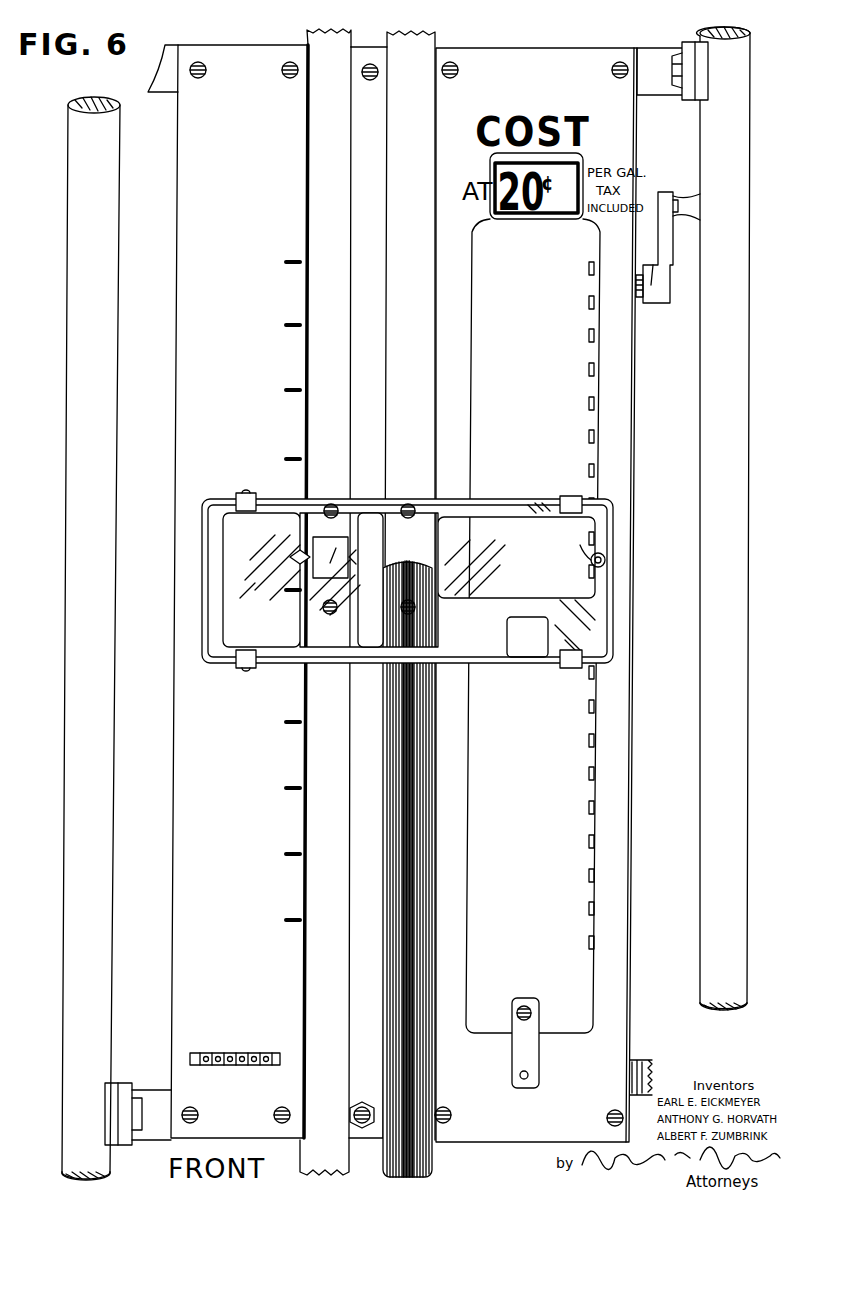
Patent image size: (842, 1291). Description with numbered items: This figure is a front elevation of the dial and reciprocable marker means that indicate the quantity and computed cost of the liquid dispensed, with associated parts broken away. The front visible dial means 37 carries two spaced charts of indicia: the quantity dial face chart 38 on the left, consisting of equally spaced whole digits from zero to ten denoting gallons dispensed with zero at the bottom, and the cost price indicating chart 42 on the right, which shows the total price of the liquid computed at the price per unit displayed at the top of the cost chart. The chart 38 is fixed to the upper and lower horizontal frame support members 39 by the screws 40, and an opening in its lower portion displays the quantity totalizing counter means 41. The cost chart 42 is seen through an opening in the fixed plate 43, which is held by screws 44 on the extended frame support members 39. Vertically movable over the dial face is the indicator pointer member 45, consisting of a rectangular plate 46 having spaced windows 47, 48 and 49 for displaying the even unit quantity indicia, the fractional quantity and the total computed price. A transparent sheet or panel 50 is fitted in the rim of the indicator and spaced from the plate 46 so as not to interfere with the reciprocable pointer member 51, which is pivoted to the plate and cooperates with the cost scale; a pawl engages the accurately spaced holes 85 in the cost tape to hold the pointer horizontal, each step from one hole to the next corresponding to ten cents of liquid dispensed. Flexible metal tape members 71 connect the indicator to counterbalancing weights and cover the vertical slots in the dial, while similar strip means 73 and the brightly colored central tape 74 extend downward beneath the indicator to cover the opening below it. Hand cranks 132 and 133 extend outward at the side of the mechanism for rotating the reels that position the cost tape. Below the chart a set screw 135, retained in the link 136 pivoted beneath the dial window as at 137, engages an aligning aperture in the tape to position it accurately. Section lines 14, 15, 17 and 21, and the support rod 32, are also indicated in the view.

The section line 14- 14 is at (150, 557).
The section line 15- 15 is at (368, 466).
The section line 17- 17 is at (376, 1178).
The section line 21- 21 is at (544, 1110).
The vertical support rod 32 is at (697, 117).
The front visible dial means 37 is at (198, 230).
The quantity dial face chart 38 is at (212, 55).
The horizontal frame support members 39 is at (176, 88).
The screws 40 is at (282, 70).
The quantity totalizing counter means 41 is at (266, 1053).
The cost price indicating chart 42 is at (474, 232).
The fixed plate 43 is at (444, 262).
The screws 44 is at (457, 76).
The indicator pointer member 45 is at (616, 620).
The rectangular plate 46 is at (208, 505).
The window 47 is at (233, 636).
The window 48 is at (343, 545).
The window 49 is at (460, 522).
The transparent sheet or panel 50 is at (236, 545).
The reciprocable pointer member 51 is at (600, 553).
The flexible metal tape members 71 is at (395, 158).
The tape or extended strip means 73 is at (352, 905).
The central tape 74 is at (395, 822).
The spaced holes 85 is at (596, 840).
The hand crank 132 is at (652, 1058).
The hand crank 133 is at (668, 290).
The set screw 135 is at (517, 1015).
The link 136 is at (532, 1046).
The pivot 137 is at (528, 1076).